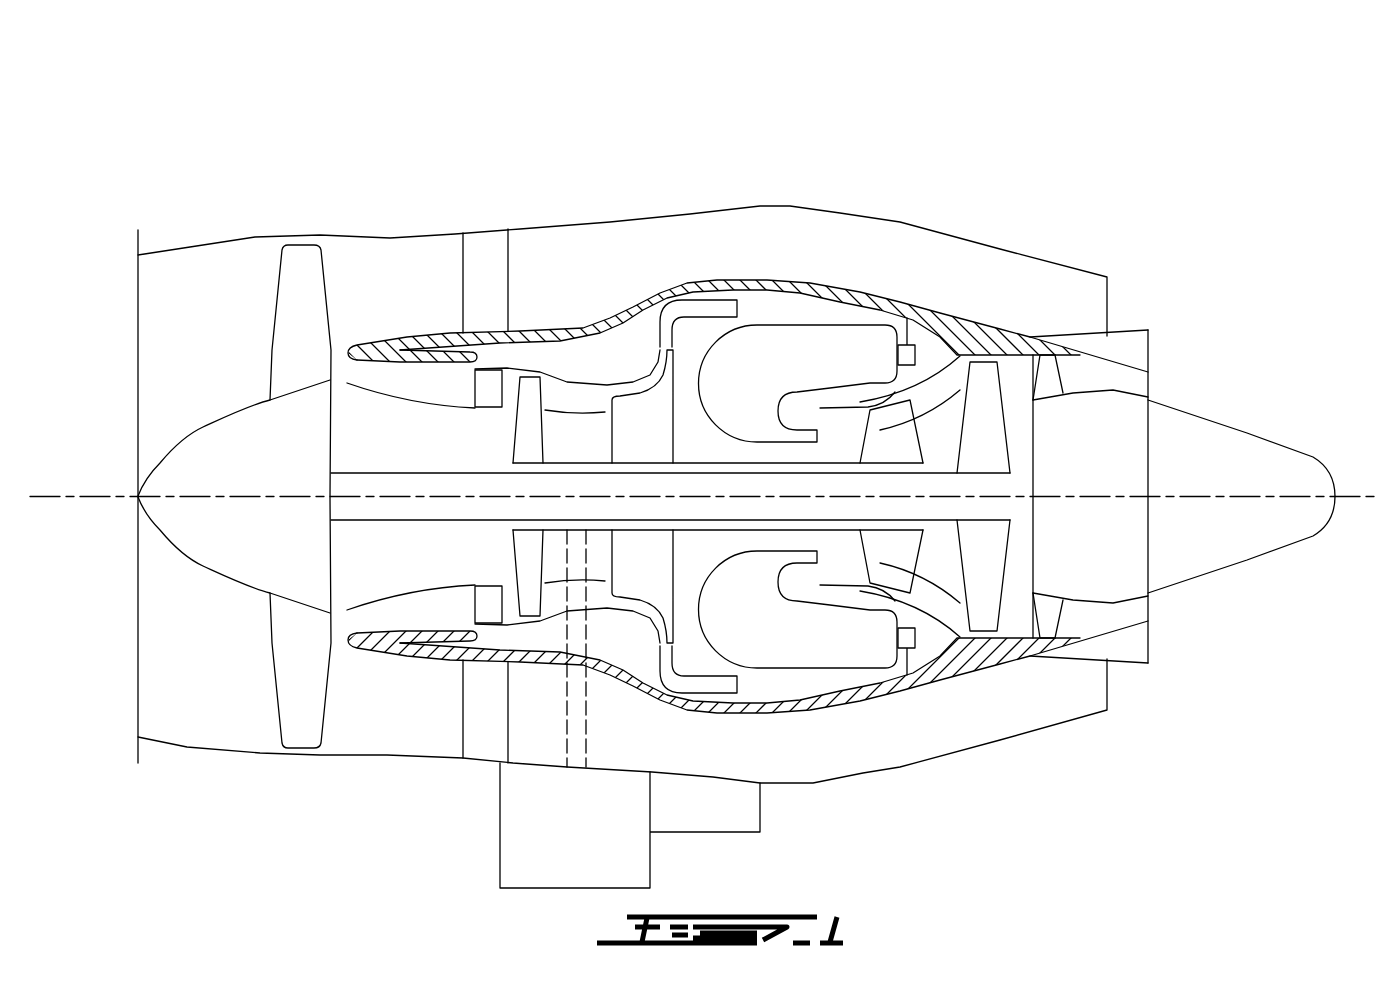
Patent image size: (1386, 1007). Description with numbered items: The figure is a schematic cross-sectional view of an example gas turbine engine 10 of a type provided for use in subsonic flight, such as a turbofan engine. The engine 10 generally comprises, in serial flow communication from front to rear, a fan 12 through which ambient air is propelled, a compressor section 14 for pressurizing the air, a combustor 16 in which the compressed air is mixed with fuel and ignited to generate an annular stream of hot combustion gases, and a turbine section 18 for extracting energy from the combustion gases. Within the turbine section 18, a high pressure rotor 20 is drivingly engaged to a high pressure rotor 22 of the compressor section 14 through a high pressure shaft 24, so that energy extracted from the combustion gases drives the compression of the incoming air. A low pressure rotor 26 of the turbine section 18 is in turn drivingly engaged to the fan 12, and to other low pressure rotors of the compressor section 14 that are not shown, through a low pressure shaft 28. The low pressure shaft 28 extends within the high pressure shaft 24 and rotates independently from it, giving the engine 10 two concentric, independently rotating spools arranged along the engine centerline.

The gas turbine engine 10 is at (956, 146).
The fan 12 is at (293, 660).
The compressor section 14 is at (565, 388).
The combustor 16 is at (798, 345).
The turbine section 18 is at (938, 567).
The high pressure rotor 20 is at (903, 418).
The high pressure rotor 22 is at (645, 415).
The high pressure shaft 24 is at (802, 460).
The low pressure rotor 26 is at (988, 407).
The low pressure shaft 28 is at (398, 520).